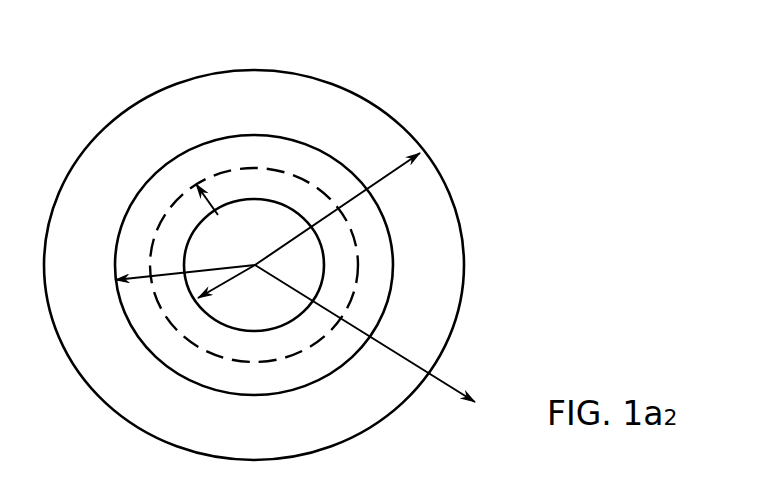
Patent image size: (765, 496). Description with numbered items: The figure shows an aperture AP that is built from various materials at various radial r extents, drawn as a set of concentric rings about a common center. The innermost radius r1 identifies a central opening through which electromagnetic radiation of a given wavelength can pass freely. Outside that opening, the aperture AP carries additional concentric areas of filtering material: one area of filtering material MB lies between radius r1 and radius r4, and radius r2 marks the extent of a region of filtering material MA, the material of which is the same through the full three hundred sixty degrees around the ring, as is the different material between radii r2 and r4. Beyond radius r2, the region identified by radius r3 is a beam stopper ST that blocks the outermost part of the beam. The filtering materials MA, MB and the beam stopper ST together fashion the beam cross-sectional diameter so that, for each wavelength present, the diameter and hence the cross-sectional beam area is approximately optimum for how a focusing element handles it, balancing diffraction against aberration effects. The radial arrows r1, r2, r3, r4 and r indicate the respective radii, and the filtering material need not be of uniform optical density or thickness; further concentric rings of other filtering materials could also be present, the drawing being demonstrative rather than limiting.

The aperture AP is at (290, 255).
The filtering material MA is at (354, 214).
The filtering material MB is at (376, 254).
The beam stopper ST is at (358, 265).
The radial extent r is at (365, 333).
The opening radius r1 is at (226, 282).
The region radius r2 is at (185, 268).
The beam stopper radius r3 is at (337, 209).
The additional region radius r4 is at (213, 197).